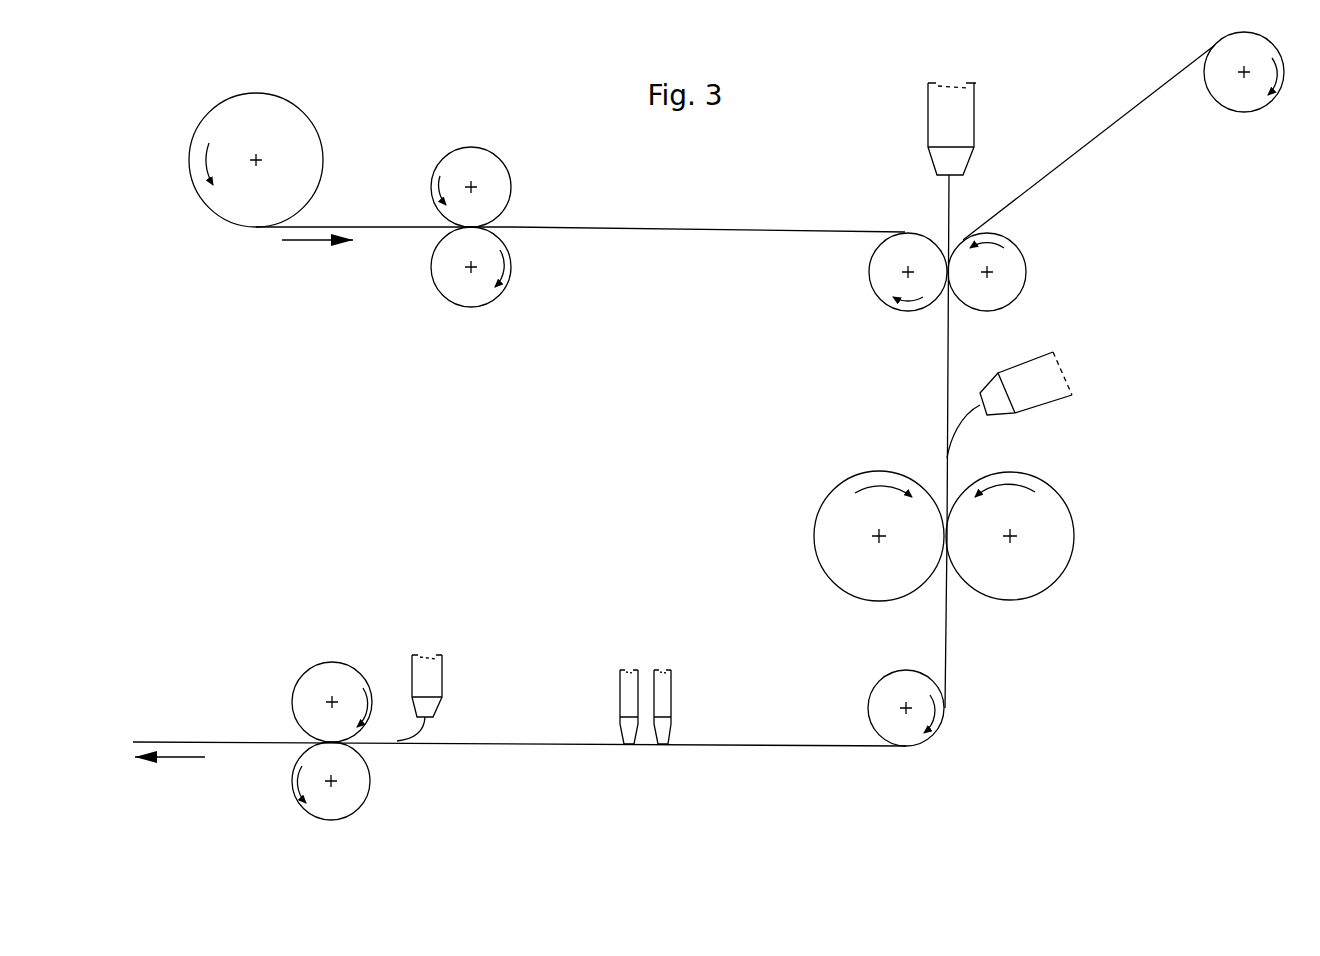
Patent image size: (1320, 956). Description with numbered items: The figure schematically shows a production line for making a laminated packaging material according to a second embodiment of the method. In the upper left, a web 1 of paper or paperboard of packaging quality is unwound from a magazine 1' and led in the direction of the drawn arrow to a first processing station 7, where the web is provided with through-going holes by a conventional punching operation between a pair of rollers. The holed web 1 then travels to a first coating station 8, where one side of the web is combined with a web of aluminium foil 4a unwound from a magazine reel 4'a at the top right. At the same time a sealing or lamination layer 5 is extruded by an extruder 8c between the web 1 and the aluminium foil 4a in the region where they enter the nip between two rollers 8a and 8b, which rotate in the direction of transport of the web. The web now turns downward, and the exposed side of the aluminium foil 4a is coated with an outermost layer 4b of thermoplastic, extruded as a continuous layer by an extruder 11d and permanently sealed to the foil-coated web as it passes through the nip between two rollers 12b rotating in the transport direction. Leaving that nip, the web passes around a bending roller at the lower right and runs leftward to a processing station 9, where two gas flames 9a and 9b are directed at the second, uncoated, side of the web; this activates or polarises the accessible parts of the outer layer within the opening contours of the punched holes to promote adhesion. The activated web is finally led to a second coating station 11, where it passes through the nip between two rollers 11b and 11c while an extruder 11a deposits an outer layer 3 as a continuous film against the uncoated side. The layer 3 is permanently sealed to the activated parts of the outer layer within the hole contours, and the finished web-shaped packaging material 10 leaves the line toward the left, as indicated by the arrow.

The magazine 1' is at (238, 147).
The web 1 is at (580, 260).
The first processing station 7 is at (470, 119).
The first coating station 8 is at (944, 197).
The roller 8a is at (1027, 278).
The roller 8b is at (870, 275).
The extruder 8c is at (927, 117).
The sealing or lamination layer 5 is at (950, 207).
The aluminium foil web 4a is at (1087, 147).
The magazine reel 4'a is at (1244, 101).
The outermost thermoplastic layer 4b is at (958, 415).
The extruder 11d is at (1033, 410).
The roller 12b is at (820, 502).
The packaging material 10 is at (233, 742).
The second coating station 11 is at (364, 700).
The extruder 11a is at (445, 680).
The roller 11b is at (370, 790).
The roller 11c is at (293, 682).
The outer layer 3 is at (422, 730).
The processing station 9 is at (649, 664).
The gas flame 9a is at (672, 688).
The gas flame 9b is at (618, 688).